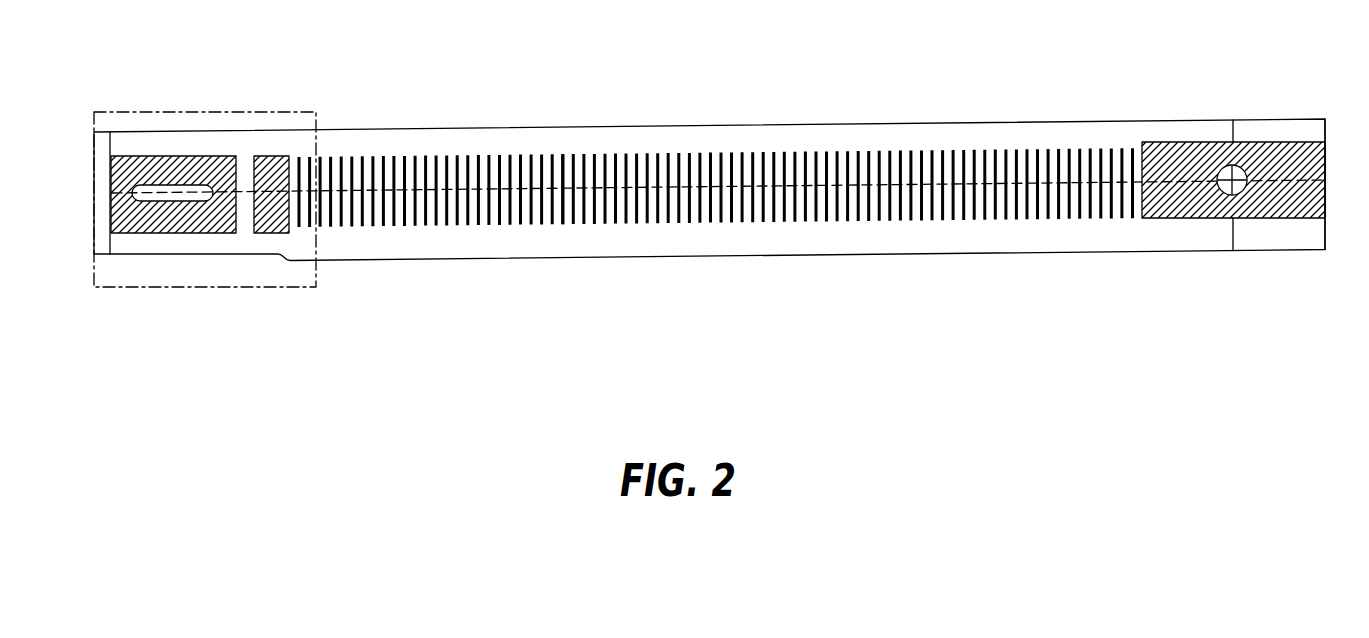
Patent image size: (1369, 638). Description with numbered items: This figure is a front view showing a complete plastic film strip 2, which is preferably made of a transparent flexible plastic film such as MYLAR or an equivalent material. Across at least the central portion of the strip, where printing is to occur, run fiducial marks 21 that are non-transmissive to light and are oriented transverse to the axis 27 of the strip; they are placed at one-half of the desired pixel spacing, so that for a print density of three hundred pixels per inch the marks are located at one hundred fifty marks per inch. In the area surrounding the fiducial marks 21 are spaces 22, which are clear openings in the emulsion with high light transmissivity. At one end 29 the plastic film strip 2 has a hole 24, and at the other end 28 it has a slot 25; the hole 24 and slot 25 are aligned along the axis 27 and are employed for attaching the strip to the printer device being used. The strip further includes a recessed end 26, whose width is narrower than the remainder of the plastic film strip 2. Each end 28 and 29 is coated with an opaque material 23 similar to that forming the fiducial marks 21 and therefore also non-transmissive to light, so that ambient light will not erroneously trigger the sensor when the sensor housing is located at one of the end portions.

The plastic film strip 2 is at (740, 98).
The fiducial marks 21 is at (417, 160).
The spaces 22 is at (562, 214).
The opaque material 23 is at (1182, 133).
The hole 24 is at (1243, 168).
The slot 25 is at (168, 197).
The recessed end 26 is at (203, 255).
The axis 27 is at (827, 197).
The end 28 is at (110, 213).
The end 29 is at (1313, 182).